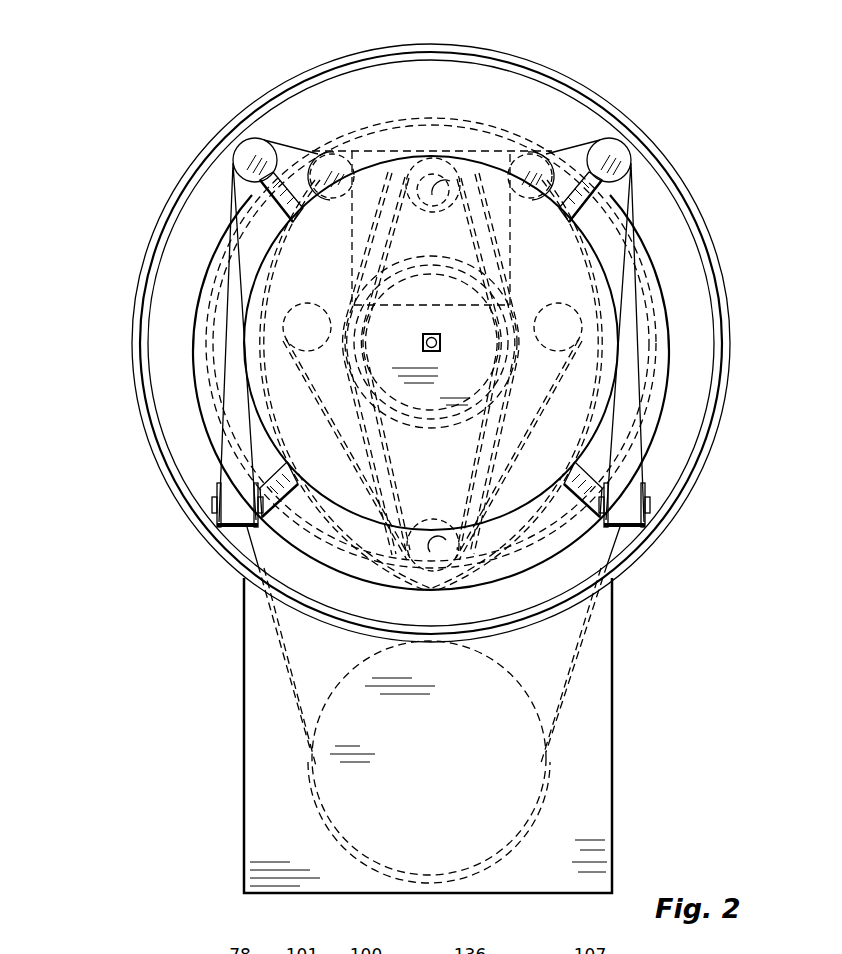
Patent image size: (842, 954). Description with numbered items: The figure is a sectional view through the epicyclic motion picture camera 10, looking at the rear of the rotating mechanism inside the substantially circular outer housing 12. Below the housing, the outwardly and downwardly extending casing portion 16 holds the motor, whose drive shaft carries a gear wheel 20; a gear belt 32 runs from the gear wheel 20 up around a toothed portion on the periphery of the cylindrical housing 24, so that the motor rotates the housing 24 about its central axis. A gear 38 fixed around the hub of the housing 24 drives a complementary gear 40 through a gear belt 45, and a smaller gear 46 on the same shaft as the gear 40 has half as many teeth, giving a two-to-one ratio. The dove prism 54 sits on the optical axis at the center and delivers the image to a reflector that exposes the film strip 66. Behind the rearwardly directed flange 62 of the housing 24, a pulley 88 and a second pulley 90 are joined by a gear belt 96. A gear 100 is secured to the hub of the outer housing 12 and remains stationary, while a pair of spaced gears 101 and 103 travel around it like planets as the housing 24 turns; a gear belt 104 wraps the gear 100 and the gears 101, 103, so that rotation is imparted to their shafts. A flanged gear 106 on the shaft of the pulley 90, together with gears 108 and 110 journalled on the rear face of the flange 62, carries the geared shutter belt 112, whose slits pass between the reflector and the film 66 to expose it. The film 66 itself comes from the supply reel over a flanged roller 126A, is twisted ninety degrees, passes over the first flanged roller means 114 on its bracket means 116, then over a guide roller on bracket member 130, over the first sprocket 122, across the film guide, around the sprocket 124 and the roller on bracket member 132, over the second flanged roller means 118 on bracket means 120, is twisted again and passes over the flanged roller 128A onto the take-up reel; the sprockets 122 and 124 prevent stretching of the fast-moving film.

The epicyclic motion picture camera 10 is at (208, 558).
The outer housing 12 is at (142, 408).
The casing portion 16 is at (255, 845).
The gear wheel 20 is at (387, 827).
The cylindrical housing 24 is at (217, 335).
The gear belt 32 is at (583, 637).
The gear 38 is at (435, 263).
The complementary gear 40 is at (433, 150).
The gear belt 45 is at (378, 211).
The gear 46 is at (430, 193).
The dove prism 54 is at (480, 240).
The rearwardly directed flange 62 is at (657, 403).
The film strip 66 is at (352, 245).
The pulley 88 is at (480, 363).
The second pulley 90 is at (440, 547).
The gear belt 96 is at (480, 427).
The gear 100 is at (557, 265).
The gear 101 is at (322, 167).
The gear 103 is at (542, 155).
The gear belt 104 is at (493, 522).
The flanged gear 106 is at (407, 580).
The gear 108 is at (308, 317).
The gear 110 is at (562, 317).
The geared shutter belt 112 is at (520, 463).
The first flanged roller means 114 is at (217, 527).
The bracket means 116 is at (280, 490).
The second flanged roller means 118 is at (647, 527).
The bracket means 120 is at (573, 493).
The sprocket member 122 is at (340, 153).
The sprocket member 124 is at (527, 153).
The flanged roller 126A is at (250, 150).
The flanged roller 128A is at (615, 167).
The bracket member 130 is at (280, 203).
The bracket member 132 is at (583, 213).